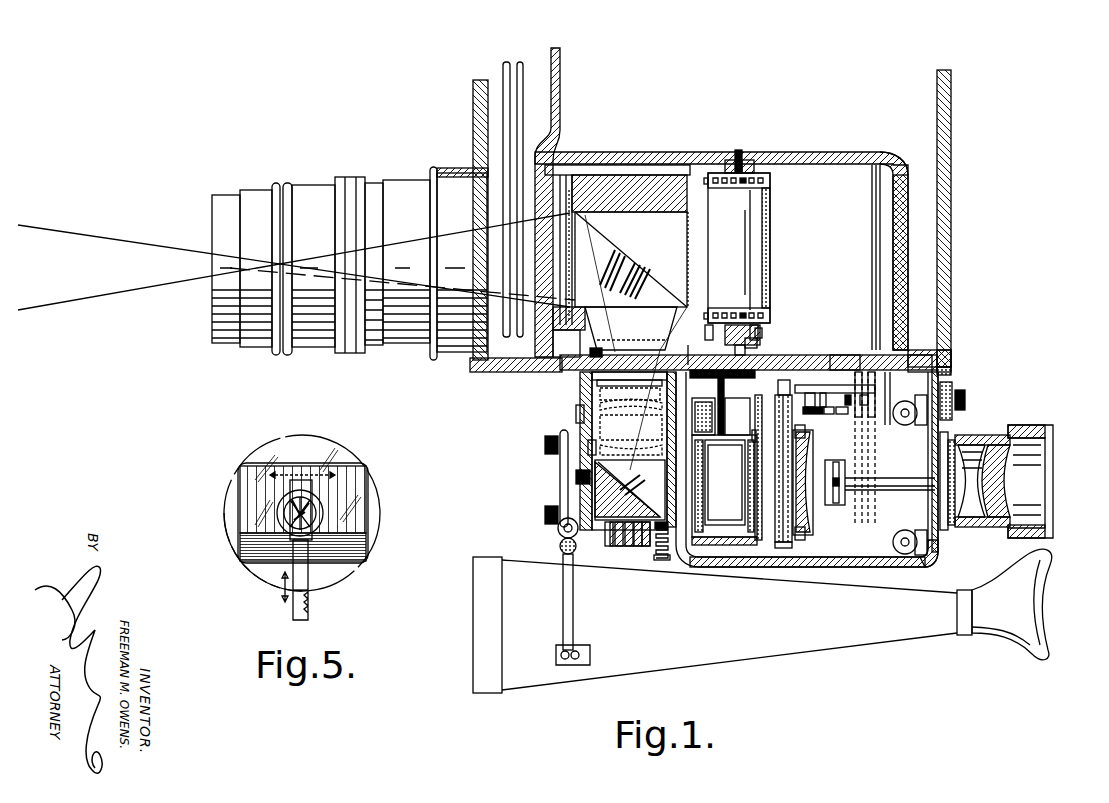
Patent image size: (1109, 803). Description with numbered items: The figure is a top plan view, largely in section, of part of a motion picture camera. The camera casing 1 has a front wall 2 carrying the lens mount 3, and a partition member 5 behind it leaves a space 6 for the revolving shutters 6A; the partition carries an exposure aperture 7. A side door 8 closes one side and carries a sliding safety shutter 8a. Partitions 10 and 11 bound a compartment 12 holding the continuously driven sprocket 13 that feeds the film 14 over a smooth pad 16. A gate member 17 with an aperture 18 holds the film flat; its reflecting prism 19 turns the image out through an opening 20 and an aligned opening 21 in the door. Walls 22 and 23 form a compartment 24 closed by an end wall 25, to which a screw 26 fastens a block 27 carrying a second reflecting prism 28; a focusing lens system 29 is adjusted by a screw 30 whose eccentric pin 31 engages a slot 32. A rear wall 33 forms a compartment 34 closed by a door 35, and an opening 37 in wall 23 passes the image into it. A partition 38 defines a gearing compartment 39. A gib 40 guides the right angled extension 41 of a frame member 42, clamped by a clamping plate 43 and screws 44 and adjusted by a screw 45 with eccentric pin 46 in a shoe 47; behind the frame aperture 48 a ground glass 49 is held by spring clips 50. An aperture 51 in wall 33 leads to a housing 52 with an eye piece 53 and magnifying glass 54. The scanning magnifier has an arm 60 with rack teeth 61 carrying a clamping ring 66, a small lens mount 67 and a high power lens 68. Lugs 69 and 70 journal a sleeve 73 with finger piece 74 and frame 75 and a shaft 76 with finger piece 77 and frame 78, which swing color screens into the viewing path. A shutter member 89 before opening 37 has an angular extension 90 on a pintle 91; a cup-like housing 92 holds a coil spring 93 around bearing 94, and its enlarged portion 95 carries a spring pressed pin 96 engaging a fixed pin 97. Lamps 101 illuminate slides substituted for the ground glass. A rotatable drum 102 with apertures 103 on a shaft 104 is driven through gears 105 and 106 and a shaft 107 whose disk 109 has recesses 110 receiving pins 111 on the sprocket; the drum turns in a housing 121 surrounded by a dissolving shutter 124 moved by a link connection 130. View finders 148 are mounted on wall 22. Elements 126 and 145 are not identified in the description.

In FIG. 1, the camera casing 1 is at (913, 128).
In FIG. 1, the front wall 2 is at (478, 107).
In FIG. 1, the lens mount 3 is at (303, 192).
In FIG. 1, the partition member 5 is at (560, 97).
In FIG. 1, the space 6 is at (513, 168).
In FIG. 1, the revolving shutters 6A is at (520, 62).
In FIG. 1, the exposure aperture 7 is at (545, 262).
In FIG. 1, the side door 8 is at (845, 358).
In FIG. 1, the safety shutter 8a is at (616, 348).
In FIG. 1, the partition 10 is at (775, 152).
In FIG. 1, the partition 11 is at (905, 200).
In FIG. 1, the compartment 12 is at (818, 165).
In FIG. 1, the continuously driven sprocket 13 is at (760, 225).
In FIG. 1, the film 14 is at (566, 246).
In FIG. 1, the smooth pad 16 is at (548, 306).
In FIG. 1, the gate member 17 is at (620, 170).
In FIG. 1, the gate aperture 18 is at (566, 230).
In FIG. 1, the reflecting prism 19 is at (640, 285).
In FIG. 1, the gate opening 20 is at (636, 350).
In FIG. 1, the door opening 21 is at (668, 392).
In FIG. 1, the wall 22 is at (598, 384).
In FIG. 1, the wall 23 is at (693, 430).
In FIG. 1, the compartment 24 is at (600, 381).
In FIG. 1, the end wall 25 is at (574, 546).
In FIG. 1, the screw 26 is at (620, 546).
In FIG. 1, the block 27 is at (580, 472).
In FIG. 1, the reflecting prism 28 is at (565, 492).
In FIG. 1, the focusing lens system 29 is at (578, 412).
In FIG. 1, the adjusting screw 30 is at (572, 428).
In FIG. 1, the eccentric pin 31 is at (600, 428).
In FIG. 1, the slot 32 is at (598, 440).
In FIG. 1, the rear wall 33 is at (948, 437).
In FIG. 1, the compartment 34 is at (867, 560).
In FIG. 1, the door 35 is at (915, 565).
In FIG. 1, the opening 37 is at (702, 490).
In FIG. 1, the partition 38 is at (952, 372).
In FIG. 1, the compartment 39 is at (847, 355).
In FIG. 1, the gib 40 is at (786, 384).
In FIG. 1, the right angled extension 41 is at (860, 400).
In FIG. 1, the frame member 42 is at (783, 464).
In FIG. 1, the clamping plate 43 is at (842, 414).
In FIG. 1, the screws 44 is at (829, 414).
In FIG. 1, the adjusting screw 45 is at (813, 417).
In FIG. 1, the eccentric pin 46 is at (809, 393).
In FIG. 1, the shoe 47 is at (823, 393).
In FIG. 1, the frame aperture 48 is at (810, 497).
In FIG. 1, the ground glass 49 is at (803, 472).
In FIG. 1, the spring clips 50 is at (805, 436).
In FIG. 1, the aperture 51 is at (898, 477).
In FIG. 1, the housing 52 is at (975, 522).
In FIG. 1, the eye piece 53 is at (1030, 430).
In FIG. 1, the magnifying glass 54 is at (1012, 470).
In FIG. 5, the magnifying glass 54 is at (262, 573).
In FIG. 5, the rack arm 60 is at (308, 573).
In FIG. 5, the rack teeth 61 is at (308, 612).
In FIG. 1, the clamping ring 66 is at (838, 505).
In FIG. 5, the clamping ring 66 is at (292, 485).
In FIG. 1, the lens mount 67 is at (840, 464).
In FIG. 5, the lens mount 67 is at (367, 545).
In FIG. 5, the scanning lens 68 is at (282, 513).
In FIG. 1, the lug 69 is at (854, 413).
In FIG. 1, the lug 70 is at (888, 402).
In FIG. 1, the sleeve 73 is at (914, 362).
In FIG. 1, the finger piece 74 is at (952, 386).
In FIG. 1, the frame 75 is at (876, 380).
In FIG. 1, the shaft 76 is at (947, 355).
In FIG. 1, the finger piece 77 is at (965, 401).
In FIG. 1, the frame 78 is at (862, 368).
In FIG. 1, the shutter member 89 is at (700, 478).
In FIG. 1, the angular extension 90 is at (638, 548).
In FIG. 1, the pintle 91 is at (632, 548).
In FIG. 1, the cup-like housing 92 is at (641, 548).
In FIG. 1, the coil spring 93 is at (622, 548).
In FIG. 1, the bearing 94 is at (608, 540).
In FIG. 1, the enlarged portion 95 is at (667, 548).
In FIG. 1, the spring pressed pin 96 is at (660, 548).
In FIG. 1, the fixed pin 97 is at (695, 546).
In FIG. 1, the lamps 101 is at (905, 425).
In FIG. 1, the rotatable drum 102 is at (734, 403).
In FIG. 1, the drum apertures 103 is at (703, 452).
In FIG. 1, the shaft 104 is at (702, 416).
In FIG. 1, the gear 105 is at (735, 348).
In FIG. 1, the gear 106 is at (762, 360).
In FIG. 1, the shaft 107 is at (757, 343).
In FIG. 1, the disk 109 is at (758, 336).
In FIG. 1, the recesses 110 is at (752, 335).
In FIG. 1, the pins 111 is at (718, 326).
In FIG. 1, the closed housing 121 is at (764, 467).
In FIG. 1, the dissolving shutter 124 is at (764, 437).
In FIG. 1, the lens foot 126 is at (773, 548).
In FIG. 1, the link connection 130 is at (688, 352).
In FIG. 1, the lens center line 145 is at (777, 480).
In FIG. 1, the view finders 148 is at (716, 652).